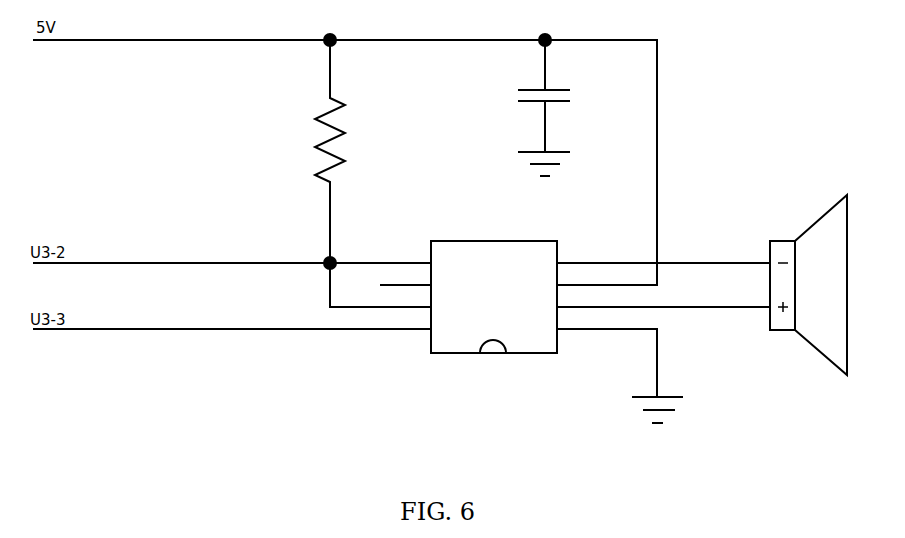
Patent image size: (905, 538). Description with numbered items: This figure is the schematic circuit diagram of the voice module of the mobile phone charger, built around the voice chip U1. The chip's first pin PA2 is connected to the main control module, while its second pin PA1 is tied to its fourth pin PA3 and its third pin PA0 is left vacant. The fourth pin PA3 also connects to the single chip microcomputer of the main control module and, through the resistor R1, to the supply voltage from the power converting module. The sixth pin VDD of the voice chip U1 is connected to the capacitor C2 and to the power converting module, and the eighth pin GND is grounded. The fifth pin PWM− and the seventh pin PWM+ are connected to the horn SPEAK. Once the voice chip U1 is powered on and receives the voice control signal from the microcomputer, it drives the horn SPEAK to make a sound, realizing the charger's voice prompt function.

The resistor R1 is at (297, 151).
The capacitor C2 is at (485, 108).
The voice chip U1 is at (587, 323).
The horn SPEAK is at (794, 285).